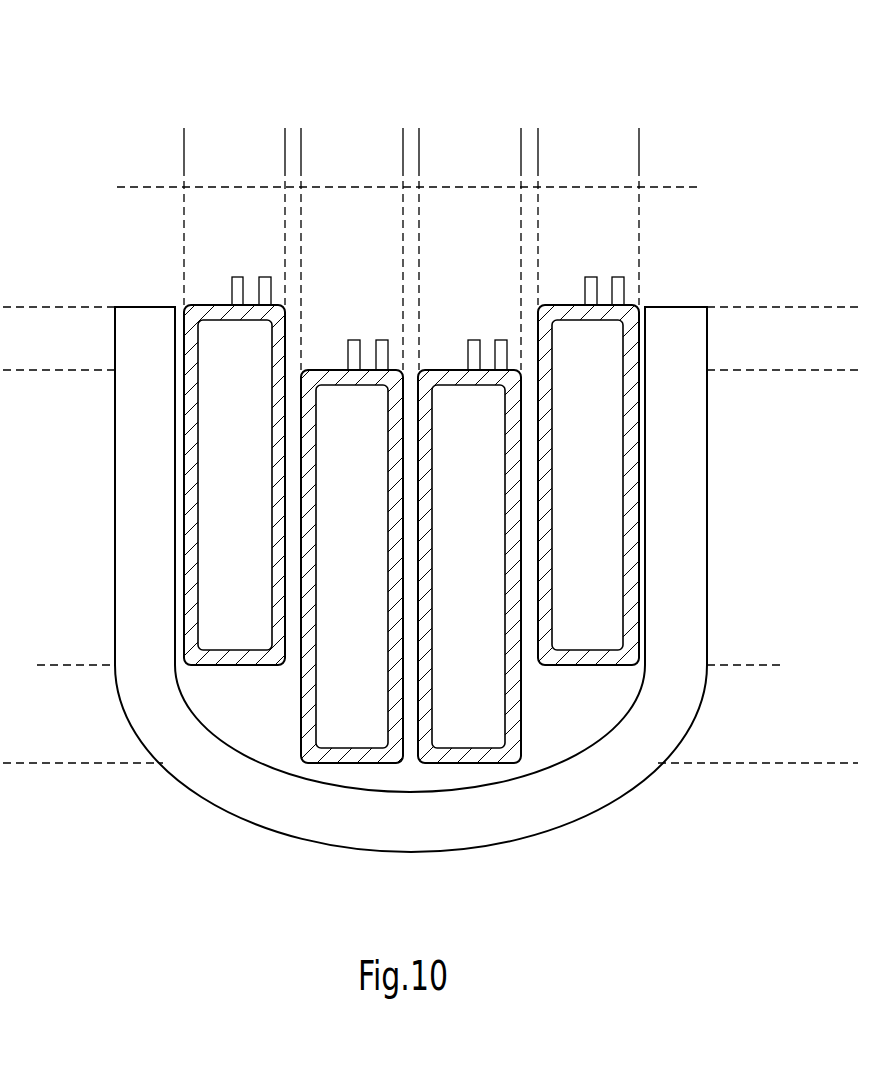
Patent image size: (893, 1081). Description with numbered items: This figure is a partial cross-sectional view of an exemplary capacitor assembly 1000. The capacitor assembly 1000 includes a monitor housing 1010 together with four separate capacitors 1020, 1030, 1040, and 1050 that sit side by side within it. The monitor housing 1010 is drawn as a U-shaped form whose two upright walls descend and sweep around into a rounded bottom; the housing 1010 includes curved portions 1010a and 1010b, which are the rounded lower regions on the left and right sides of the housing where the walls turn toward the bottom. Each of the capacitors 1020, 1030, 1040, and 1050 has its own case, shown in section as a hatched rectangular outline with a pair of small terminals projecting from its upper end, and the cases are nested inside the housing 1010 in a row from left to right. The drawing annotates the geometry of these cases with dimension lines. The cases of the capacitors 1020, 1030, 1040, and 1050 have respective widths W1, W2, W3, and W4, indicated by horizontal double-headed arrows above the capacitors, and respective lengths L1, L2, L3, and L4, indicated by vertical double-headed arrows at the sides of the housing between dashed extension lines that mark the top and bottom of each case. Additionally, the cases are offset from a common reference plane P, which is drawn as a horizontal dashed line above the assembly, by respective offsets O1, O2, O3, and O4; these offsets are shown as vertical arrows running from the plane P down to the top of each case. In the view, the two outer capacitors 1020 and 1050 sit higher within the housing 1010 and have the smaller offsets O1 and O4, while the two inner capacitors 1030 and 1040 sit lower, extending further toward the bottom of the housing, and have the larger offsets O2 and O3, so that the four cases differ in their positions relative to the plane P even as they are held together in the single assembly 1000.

The capacitor assembly 1000 is at (155, 60).
The monitor housing 1010 is at (688, 305).
The curved portion 1010a is at (194, 763).
The curved portion 1010b is at (628, 763).
The capacitor 1020 is at (217, 541).
The capacitor 1030 is at (334, 541).
The capacitor 1040 is at (449, 541).
The capacitor 1050 is at (565, 541).
The width W1 is at (184, 142).
The width W2 is at (301, 142).
The width W3 is at (419, 142).
The width W4 is at (538, 142).
The offset O1 is at (212, 187).
The offset O2 is at (331, 370).
The offset O3 is at (449, 370).
The offset O4 is at (566, 187).
The length L1 is at (71, 307).
The length L2 is at (20, 370).
The length L3 is at (802, 370).
The length L4 is at (751, 307).
The common reference plane P is at (678, 187).